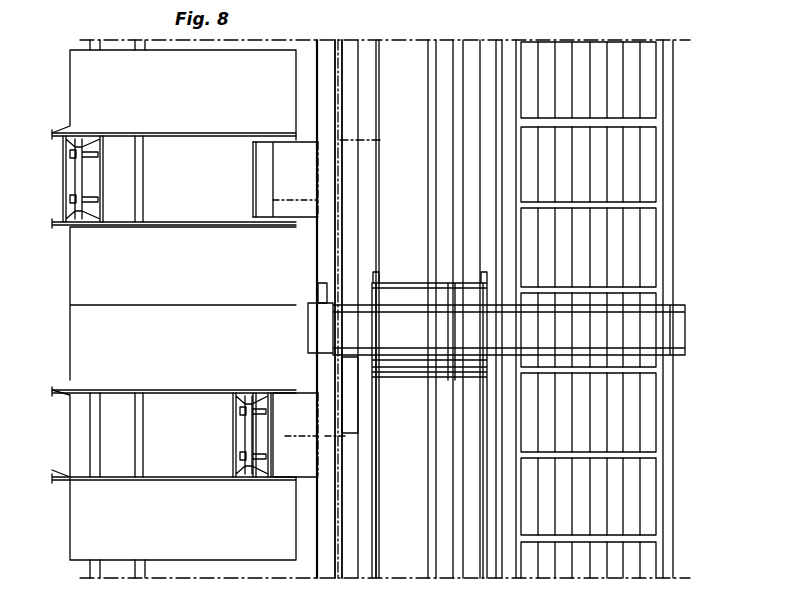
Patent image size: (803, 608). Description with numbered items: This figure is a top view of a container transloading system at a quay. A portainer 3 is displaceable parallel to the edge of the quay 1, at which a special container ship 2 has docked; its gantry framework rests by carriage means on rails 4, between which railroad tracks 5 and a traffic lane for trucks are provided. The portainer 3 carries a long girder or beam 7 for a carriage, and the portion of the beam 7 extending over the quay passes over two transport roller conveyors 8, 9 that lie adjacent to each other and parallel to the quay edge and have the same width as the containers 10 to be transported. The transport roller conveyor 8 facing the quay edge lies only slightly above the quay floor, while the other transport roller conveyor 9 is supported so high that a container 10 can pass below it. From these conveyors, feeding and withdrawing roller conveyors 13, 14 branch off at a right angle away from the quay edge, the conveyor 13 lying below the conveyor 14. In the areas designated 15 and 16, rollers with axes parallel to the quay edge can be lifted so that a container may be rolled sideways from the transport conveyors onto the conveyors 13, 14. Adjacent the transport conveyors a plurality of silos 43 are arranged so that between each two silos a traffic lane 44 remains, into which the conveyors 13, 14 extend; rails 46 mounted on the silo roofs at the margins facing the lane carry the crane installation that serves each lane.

The quay 1 is at (416, 190).
The container ship 2 is at (668, 188).
The portainer 3 is at (400, 272).
The rails 4 is at (380, 152).
The railroad tracks 5 is at (458, 52).
The girder or beam 7 is at (672, 350).
The transport roller conveyor 8 is at (346, 42).
The transport roller conveyor 9 is at (326, 42).
The container 10 is at (95, 172).
The feeding and withdrawing roller conveyor 13 is at (263, 186).
The feeding and withdrawing roller conveyor 14 is at (312, 164).
The transfer area 15 is at (362, 196).
The transfer area 16 is at (318, 198).
The silo 43 is at (80, 82).
The traffic lane 44 is at (214, 188).
The rails 46 is at (173, 136).